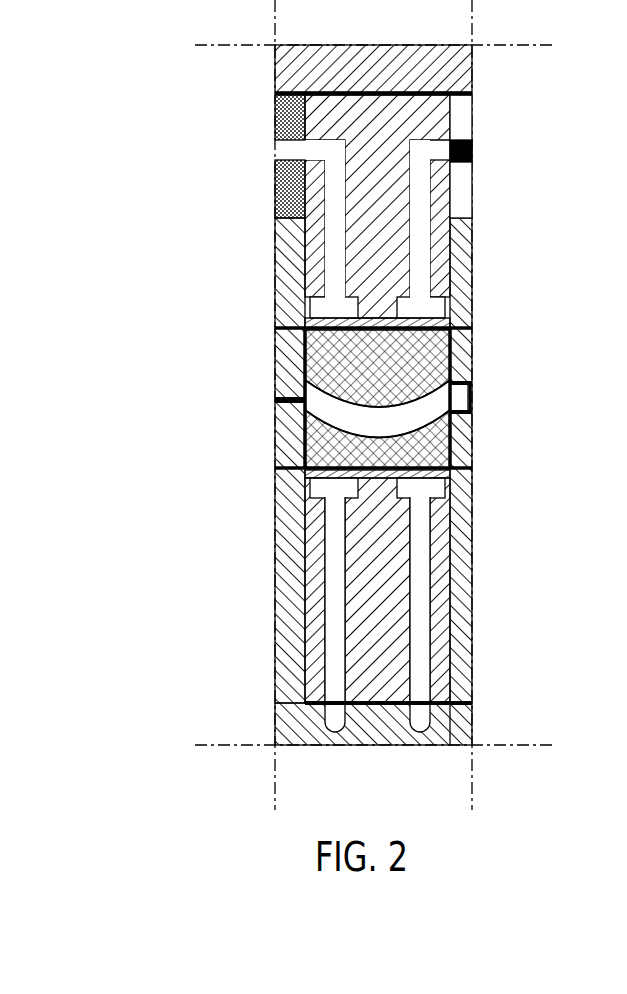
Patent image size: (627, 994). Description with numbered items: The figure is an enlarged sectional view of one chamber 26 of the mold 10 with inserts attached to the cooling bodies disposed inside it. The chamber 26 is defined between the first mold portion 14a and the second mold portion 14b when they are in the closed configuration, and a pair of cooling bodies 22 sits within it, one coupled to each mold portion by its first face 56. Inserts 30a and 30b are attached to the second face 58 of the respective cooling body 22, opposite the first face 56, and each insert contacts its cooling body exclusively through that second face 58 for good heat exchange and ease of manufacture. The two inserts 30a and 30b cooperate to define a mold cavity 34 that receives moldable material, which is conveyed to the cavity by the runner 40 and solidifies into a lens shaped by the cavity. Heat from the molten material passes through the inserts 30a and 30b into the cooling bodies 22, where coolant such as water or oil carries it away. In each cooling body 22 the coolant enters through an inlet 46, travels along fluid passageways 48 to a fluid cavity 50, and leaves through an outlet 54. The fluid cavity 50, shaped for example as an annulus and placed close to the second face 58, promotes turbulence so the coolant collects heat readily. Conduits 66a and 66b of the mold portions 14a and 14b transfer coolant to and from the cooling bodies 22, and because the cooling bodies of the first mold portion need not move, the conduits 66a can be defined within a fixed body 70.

The mold 10 is at (143, 22).
The first mold portion 14a is at (279, 740).
The second mold portion 14b is at (461, 62).
The cooling body 22 is at (312, 243).
The chamber 26 is at (438, 340).
The insert 30a is at (460, 465).
The insert 30b is at (470, 364).
The mold cavity 34 is at (340, 411).
The runner 40 is at (473, 398).
The inlet 46 is at (306, 142).
The fluid passageway 48 is at (326, 211).
The fluid cavity 50 is at (321, 317).
The outlet 54 is at (452, 140).
The first face 56 is at (276, 89).
The second face 58 is at (330, 333).
The conduit 66a is at (452, 740).
The conduit 66b is at (470, 161).
The fixed body 70 is at (466, 615).